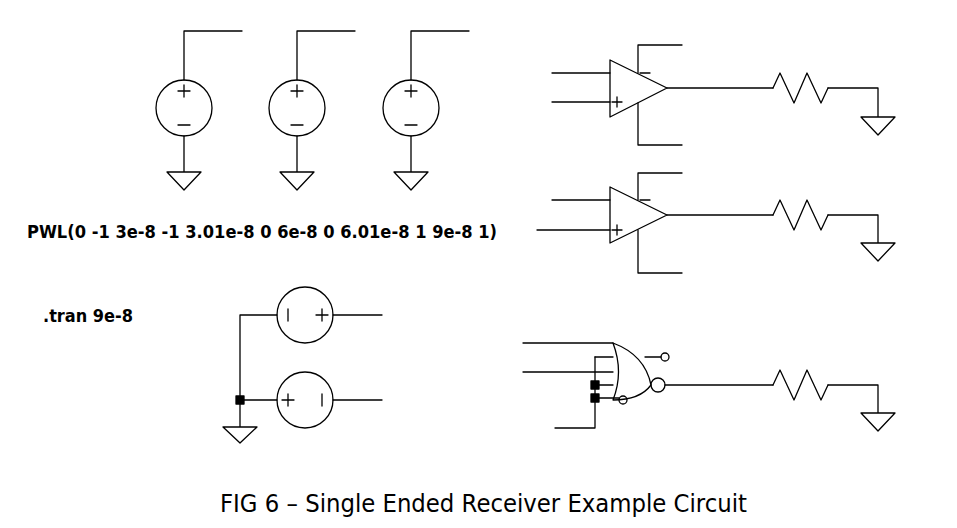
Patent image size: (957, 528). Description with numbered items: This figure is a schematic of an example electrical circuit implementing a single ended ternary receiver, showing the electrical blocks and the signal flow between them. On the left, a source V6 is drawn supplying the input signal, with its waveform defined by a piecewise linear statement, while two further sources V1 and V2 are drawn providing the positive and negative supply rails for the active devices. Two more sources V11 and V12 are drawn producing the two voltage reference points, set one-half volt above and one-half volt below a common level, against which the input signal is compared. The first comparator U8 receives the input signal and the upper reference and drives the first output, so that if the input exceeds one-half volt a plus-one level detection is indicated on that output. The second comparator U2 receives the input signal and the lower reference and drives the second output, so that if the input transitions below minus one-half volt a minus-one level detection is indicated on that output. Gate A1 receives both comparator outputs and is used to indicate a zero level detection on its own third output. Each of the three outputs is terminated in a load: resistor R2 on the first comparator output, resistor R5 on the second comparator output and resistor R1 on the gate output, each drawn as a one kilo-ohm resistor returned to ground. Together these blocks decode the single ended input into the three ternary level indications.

The PWL voltage source VP V6 is at (199, 99).
The positive supply voltage source 2V V1 is at (312, 99).
The negative supply voltage source -2V V2 is at (426, 99).
The offset voltage source 0.5 (V0+0.5) V11 is at (320, 331).
The offset voltage source 0.5 (V0-0.5) V12 is at (310, 395).
The comparator LTC6752 producing OUTA U8 is at (636, 83).
The comparator LTC6752 producing OUTB U2 is at (637, 211).
The gate A1 is at (625, 377).
The 1K output resistor for OUTA R2 is at (781, 93).
The 1K output resistor for OUTB R5 is at (781, 220).
The 1K output resistor for OUTC R1 is at (780, 388).